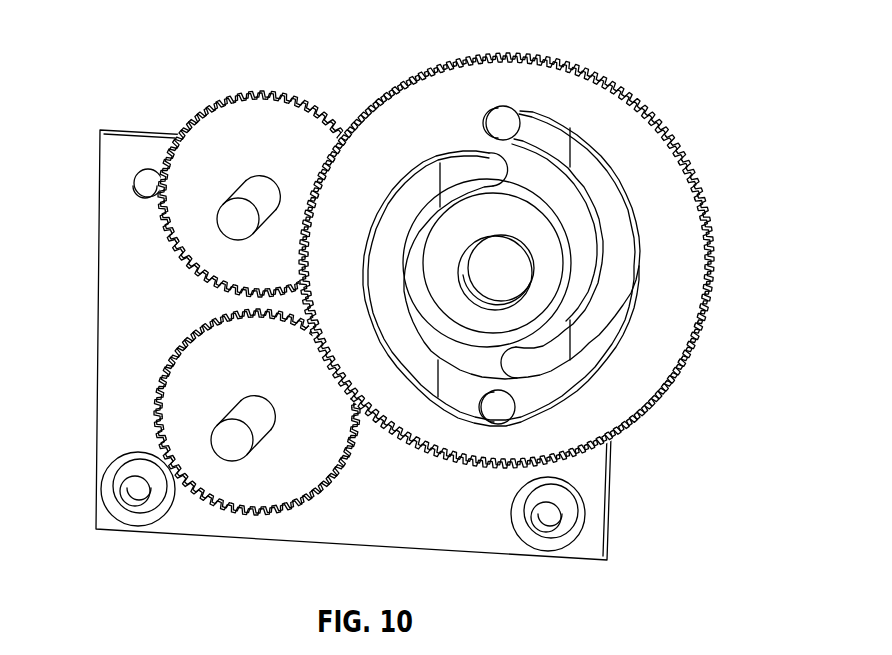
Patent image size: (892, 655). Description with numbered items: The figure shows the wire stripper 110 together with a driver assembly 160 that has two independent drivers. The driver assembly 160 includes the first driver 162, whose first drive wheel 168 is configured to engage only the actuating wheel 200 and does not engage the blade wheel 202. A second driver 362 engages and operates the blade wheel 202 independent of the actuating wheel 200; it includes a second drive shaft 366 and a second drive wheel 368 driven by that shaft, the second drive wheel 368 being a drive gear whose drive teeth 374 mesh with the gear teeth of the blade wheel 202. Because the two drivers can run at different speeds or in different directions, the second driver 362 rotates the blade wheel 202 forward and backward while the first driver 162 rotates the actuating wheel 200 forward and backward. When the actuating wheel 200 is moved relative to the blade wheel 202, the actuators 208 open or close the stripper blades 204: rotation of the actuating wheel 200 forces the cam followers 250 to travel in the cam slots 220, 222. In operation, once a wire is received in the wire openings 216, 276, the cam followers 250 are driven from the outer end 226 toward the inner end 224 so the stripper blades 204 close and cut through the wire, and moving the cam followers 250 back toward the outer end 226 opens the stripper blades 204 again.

The wire stripper 110 is at (677, 75).
The driver assembly 160 is at (155, 106).
The first driver 162 is at (218, 512).
The first drive wheel 168 is at (245, 445).
The actuating wheel 200 is at (663, 310).
The blade wheel 202 is at (712, 282).
The stripper blades 204 is at (545, 125).
The actuators 208 is at (480, 123).
The wire opening 216 is at (467, 300).
The cam slot 220 is at (623, 200).
The cam slot 222 is at (460, 422).
The inner end 224 is at (513, 300).
The outer end 226 is at (488, 128).
The cam followers 250 is at (510, 117).
The wire opening 276 is at (650, 127).
The second driver 362 is at (233, 92).
The second drive shaft 366 is at (238, 193).
The second drive wheel 368 is at (268, 124).
The drive teeth 374 is at (324, 111).